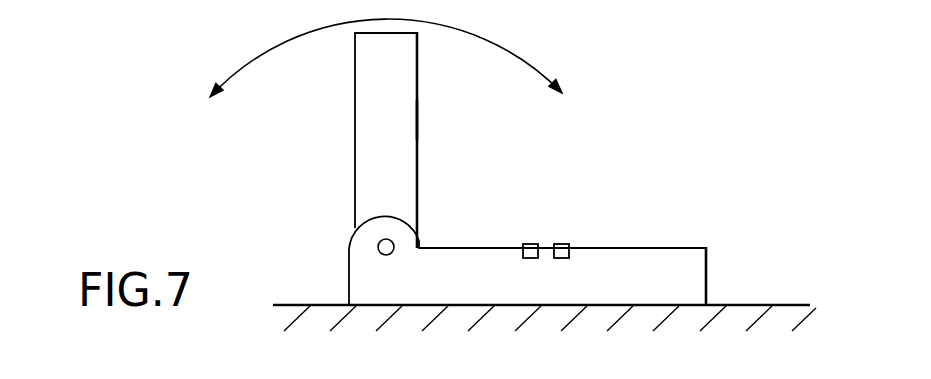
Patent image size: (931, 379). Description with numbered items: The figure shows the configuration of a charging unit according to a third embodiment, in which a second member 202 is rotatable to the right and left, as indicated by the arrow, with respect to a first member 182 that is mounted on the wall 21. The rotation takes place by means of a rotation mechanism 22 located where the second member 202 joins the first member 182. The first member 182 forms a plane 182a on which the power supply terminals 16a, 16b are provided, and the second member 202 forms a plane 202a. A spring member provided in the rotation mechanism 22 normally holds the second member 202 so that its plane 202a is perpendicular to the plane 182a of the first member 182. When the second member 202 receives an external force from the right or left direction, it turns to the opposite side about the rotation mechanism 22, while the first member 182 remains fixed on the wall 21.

The second member 202 is at (365, 80).
The plane of the second member 202a is at (418, 114).
The rotation mechanism 22 is at (373, 250).
The power supply terminal 16a is at (528, 244).
The power supply terminal 16b is at (562, 244).
The plane of the first member 182a is at (625, 248).
The first member 182 is at (706, 248).
The wall 21 is at (762, 304).